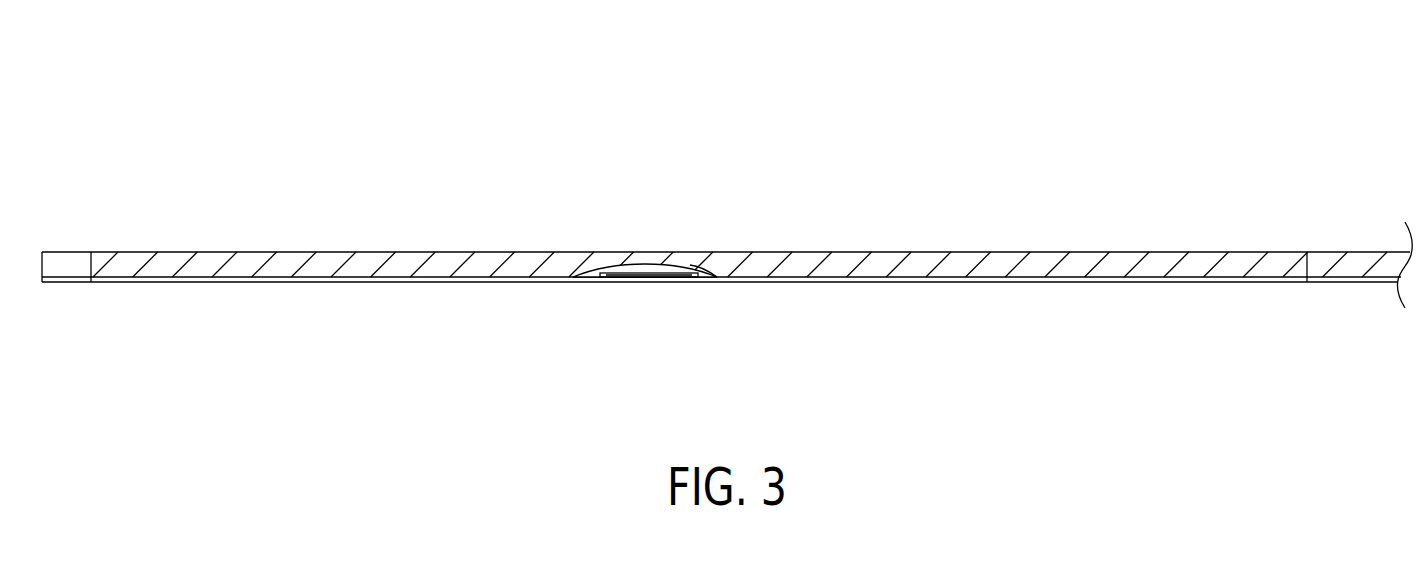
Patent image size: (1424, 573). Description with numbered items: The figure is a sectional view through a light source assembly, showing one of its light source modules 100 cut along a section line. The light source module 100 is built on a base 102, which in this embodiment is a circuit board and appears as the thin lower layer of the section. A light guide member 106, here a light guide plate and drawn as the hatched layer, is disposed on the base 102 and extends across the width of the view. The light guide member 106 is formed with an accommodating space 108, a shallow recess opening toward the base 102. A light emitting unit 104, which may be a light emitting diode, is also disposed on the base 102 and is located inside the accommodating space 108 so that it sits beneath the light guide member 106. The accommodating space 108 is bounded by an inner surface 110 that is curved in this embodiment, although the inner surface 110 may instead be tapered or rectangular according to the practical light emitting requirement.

The light source module 100 is at (779, 139).
The base 102 is at (367, 283).
The light emitting unit 104 is at (641, 280).
The light guide member 106 is at (958, 252).
The accommodating space 108 is at (627, 263).
The inner surface 110 is at (683, 264).